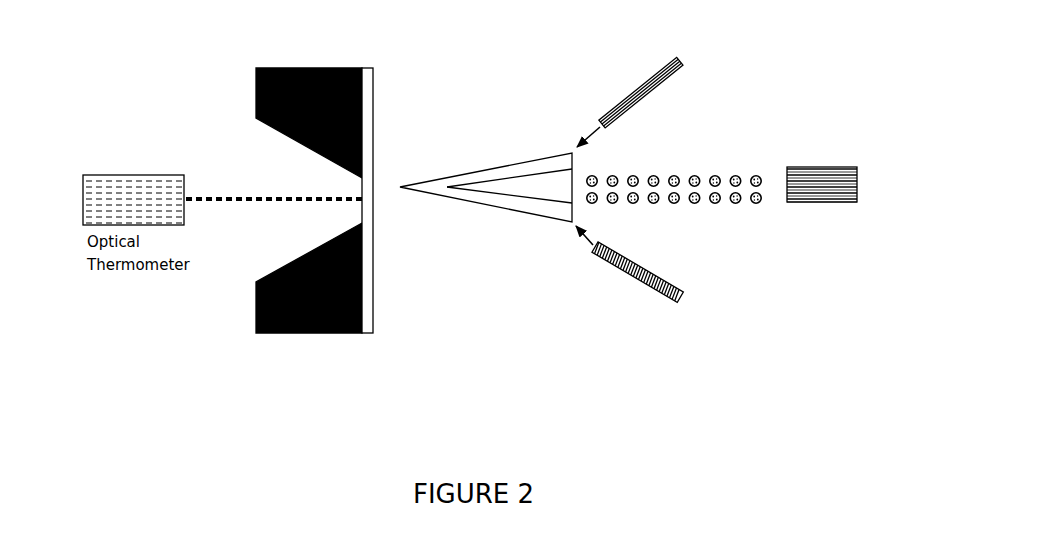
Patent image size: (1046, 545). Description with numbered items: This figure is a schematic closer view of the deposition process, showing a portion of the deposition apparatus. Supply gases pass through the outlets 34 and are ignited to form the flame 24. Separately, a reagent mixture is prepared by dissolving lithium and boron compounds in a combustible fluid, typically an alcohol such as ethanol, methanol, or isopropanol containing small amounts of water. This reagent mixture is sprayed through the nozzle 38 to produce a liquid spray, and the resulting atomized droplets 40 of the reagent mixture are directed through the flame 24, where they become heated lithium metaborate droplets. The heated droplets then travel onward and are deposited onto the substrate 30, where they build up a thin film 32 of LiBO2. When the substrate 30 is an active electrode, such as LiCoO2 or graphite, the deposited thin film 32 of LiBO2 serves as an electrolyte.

The flame 24 is at (504, 159).
The substrate 30 is at (294, 64).
The thin film 32 is at (375, 320).
The outlets 34 is at (651, 97).
The nozzle 38 is at (795, 166).
The atomized droplets 40 is at (719, 213).